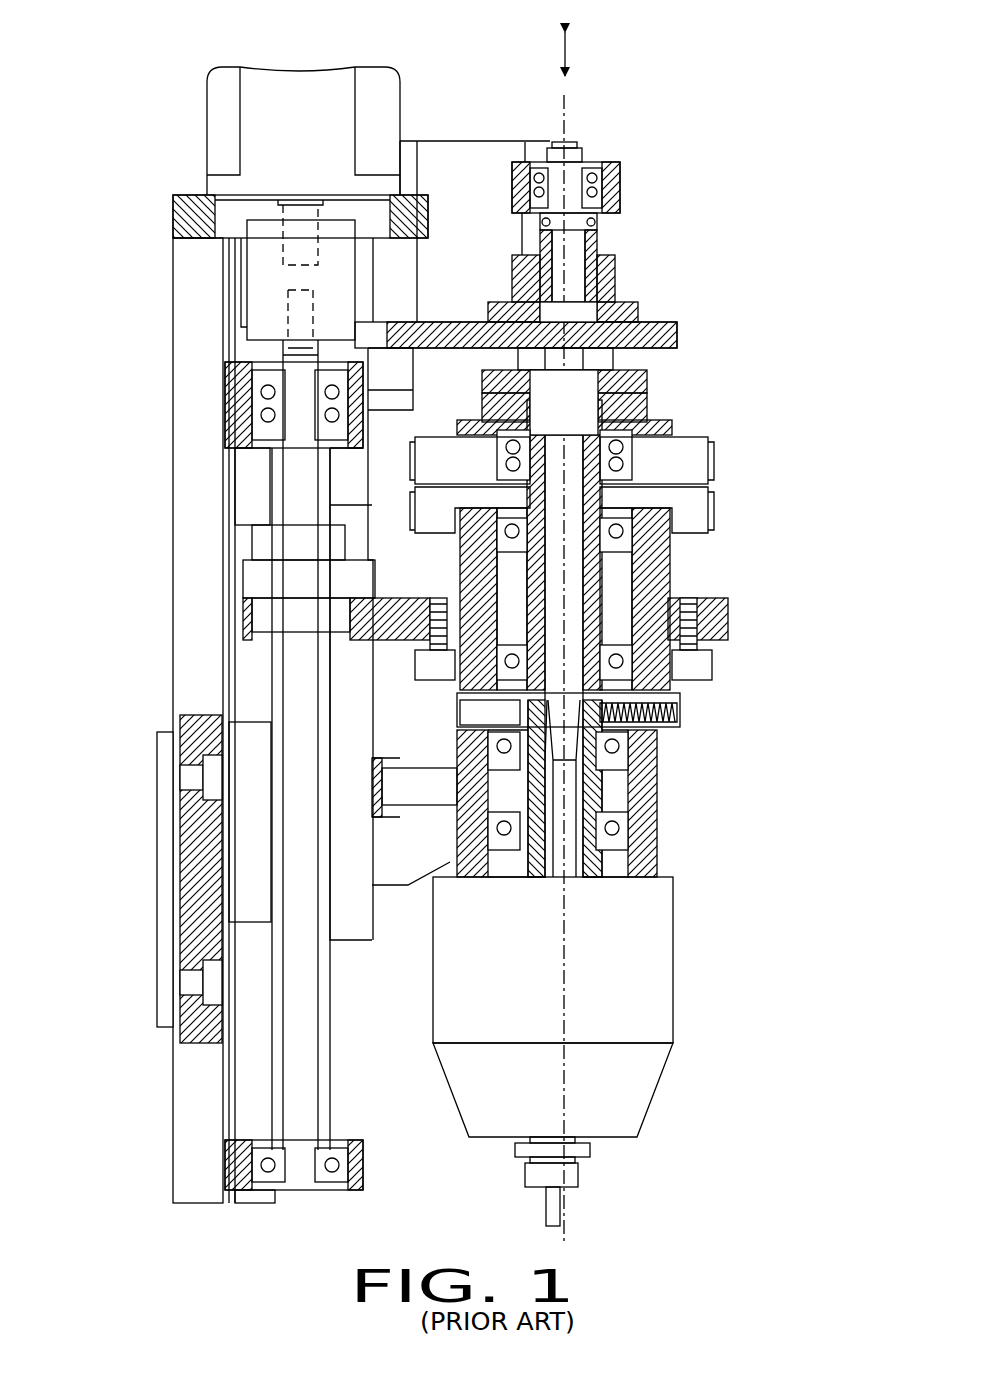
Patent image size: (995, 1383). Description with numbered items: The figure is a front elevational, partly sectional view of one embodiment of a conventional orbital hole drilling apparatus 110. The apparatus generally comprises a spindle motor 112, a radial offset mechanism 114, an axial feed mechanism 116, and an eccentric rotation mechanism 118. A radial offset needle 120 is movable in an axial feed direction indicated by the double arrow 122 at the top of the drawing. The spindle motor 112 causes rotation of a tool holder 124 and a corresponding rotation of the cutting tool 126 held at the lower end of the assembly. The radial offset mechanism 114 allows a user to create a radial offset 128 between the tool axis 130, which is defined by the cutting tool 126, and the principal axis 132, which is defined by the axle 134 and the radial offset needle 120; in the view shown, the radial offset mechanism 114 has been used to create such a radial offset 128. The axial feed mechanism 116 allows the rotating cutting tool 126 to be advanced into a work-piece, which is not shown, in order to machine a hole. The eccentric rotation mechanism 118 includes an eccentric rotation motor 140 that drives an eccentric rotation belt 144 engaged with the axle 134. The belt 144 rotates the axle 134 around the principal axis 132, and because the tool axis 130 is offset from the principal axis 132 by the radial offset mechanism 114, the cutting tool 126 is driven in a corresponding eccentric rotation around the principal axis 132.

The orbital hole drilling apparatus 110 is at (692, 222).
The spindle motor 112 is at (692, 1098).
The radial offset mechanism 114 is at (733, 457).
The axial feed mechanism 116 is at (527, 118).
The eccentric rotation mechanism 118 is at (165, 188).
The radial offset needle 120 is at (728, 617).
The double arrow 122 is at (567, 50).
The tool holder 124 is at (530, 1172).
The cutting tool 126 is at (558, 1200).
The radial offset 128 is at (565, 785).
The tool axis 130 is at (552, 980).
The principal axis 132 is at (577, 644).
The axle 134 is at (565, 612).
The eccentric rotation motor 140 is at (265, 270).
The eccentric rotation belt 144 is at (697, 502).